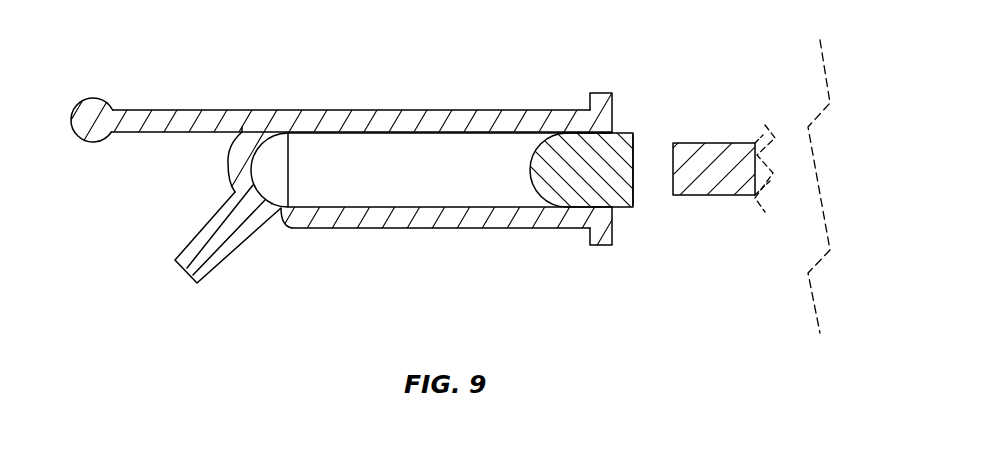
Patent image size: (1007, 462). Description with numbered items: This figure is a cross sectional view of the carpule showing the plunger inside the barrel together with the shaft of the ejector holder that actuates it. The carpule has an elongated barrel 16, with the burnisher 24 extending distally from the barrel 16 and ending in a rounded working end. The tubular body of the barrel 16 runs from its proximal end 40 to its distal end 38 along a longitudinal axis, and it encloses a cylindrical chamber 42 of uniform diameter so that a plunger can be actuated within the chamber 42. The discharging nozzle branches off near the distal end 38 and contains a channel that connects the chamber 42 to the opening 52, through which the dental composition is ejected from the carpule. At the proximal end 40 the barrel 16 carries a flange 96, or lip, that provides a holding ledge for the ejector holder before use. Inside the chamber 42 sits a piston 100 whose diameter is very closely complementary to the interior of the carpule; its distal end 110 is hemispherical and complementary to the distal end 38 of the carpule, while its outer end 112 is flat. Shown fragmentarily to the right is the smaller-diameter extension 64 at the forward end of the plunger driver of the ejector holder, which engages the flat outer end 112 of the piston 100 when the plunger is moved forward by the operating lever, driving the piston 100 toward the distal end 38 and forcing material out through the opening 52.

The barrel 16 is at (407, 110).
The burnisher 24 is at (156, 88).
The distal end 38 is at (229, 180).
The proximal end 40 is at (613, 232).
The cylindrical chamber 42 is at (383, 183).
The opening 52 is at (184, 286).
The extension 64 is at (713, 197).
The flange 96 is at (601, 93).
The piston 100 is at (631, 208).
The distal end of piston 110 is at (532, 165).
The outer end of piston 112 is at (636, 152).